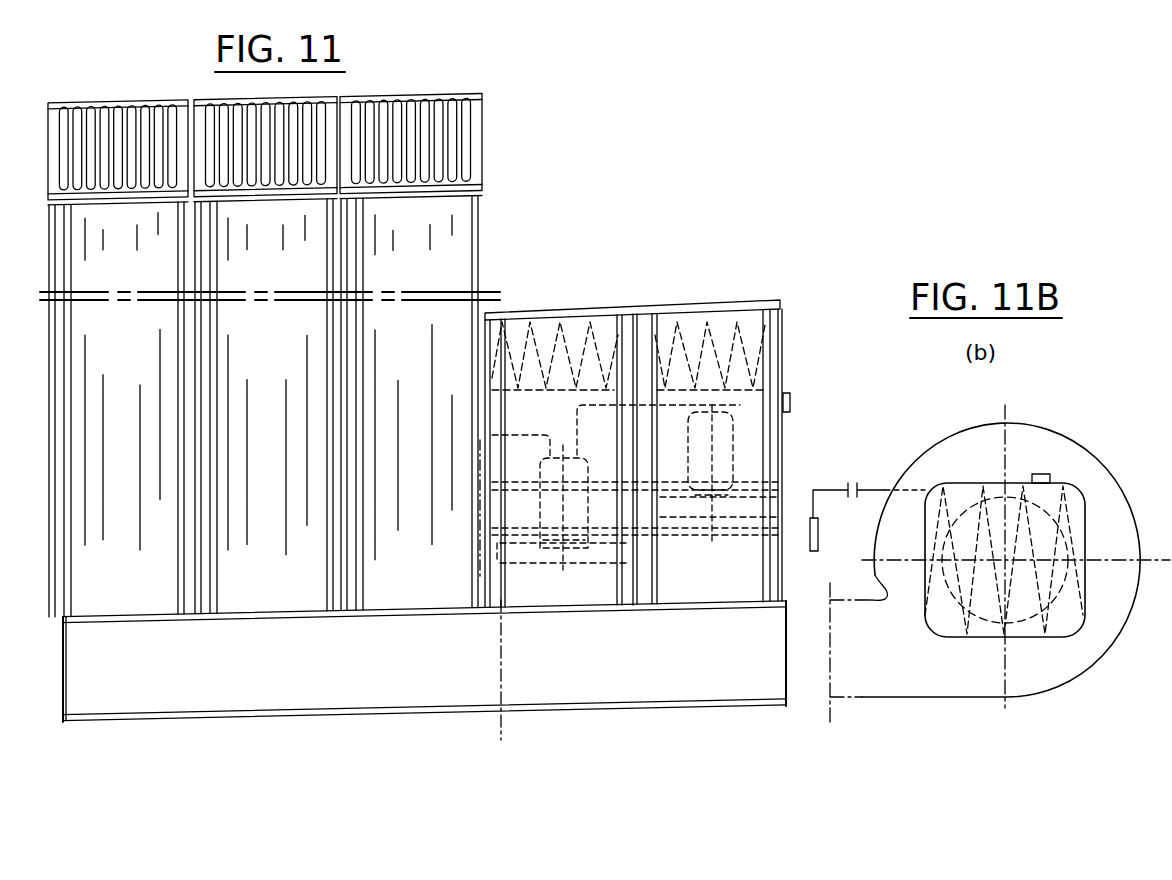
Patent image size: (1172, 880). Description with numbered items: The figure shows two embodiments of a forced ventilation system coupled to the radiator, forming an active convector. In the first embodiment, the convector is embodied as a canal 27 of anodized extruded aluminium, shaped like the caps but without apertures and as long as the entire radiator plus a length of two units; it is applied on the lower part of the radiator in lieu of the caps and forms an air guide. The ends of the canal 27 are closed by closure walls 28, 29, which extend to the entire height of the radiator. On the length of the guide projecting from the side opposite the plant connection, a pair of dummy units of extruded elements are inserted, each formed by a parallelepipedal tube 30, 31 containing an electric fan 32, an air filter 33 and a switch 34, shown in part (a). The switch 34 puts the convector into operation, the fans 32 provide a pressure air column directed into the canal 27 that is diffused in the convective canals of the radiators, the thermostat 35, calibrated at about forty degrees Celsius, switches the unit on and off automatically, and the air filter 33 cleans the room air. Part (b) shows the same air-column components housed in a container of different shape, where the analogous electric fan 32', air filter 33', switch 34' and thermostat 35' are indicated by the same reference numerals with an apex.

In FIG. 11, the canal 27 is at (256, 682).
In FIG. 11, the closure wall 28 is at (66, 665).
In FIG. 11, the closure wall 29 is at (788, 657).
In FIG. 11, the parallelepipedal tube 30 is at (556, 313).
In FIG. 11, the parallelepipedal tube 31 is at (742, 340).
In FIG. 11, the electric fan 32 is at (761, 396).
In FIG. 11, the air filter 33 is at (599, 307).
In FIG. 11, the switch 34 is at (824, 388).
In FIG. 11, the thermostat 35 is at (478, 699).
In FIG. 11B, the electric fan 32' is at (1000, 543).
In FIG. 11B, the air filter 33' is at (1005, 499).
In FIG. 11B, the switch 34' is at (1070, 422).
In FIG. 11B, the thermostat 35' is at (867, 456).